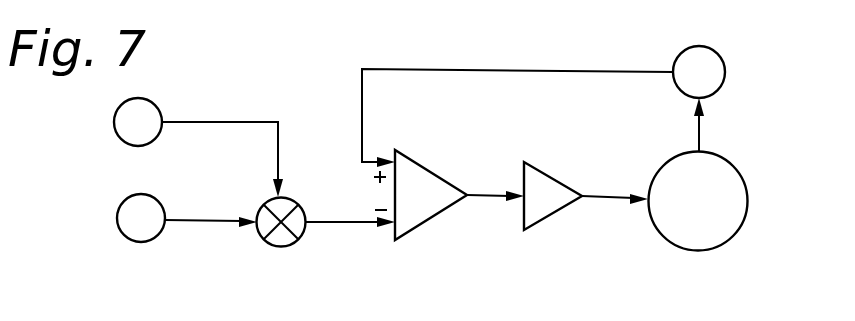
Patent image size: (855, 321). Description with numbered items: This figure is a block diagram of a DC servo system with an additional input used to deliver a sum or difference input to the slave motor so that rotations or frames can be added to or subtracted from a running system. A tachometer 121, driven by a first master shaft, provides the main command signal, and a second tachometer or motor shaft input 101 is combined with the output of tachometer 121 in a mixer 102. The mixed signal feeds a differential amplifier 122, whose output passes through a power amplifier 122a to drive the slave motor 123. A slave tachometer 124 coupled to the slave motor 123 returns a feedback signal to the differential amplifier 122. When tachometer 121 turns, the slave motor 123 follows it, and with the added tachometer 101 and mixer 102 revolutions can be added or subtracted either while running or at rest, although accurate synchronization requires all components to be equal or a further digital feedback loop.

The second tachometer 101 is at (114, 123).
The tachometer 121 is at (117, 212).
The mixer 102 is at (264, 240).
The differential amplifier 122 is at (430, 172).
The power amplifier 122a is at (545, 173).
The slave motor 123 is at (747, 218).
The slave tachometer 124 is at (725, 72).